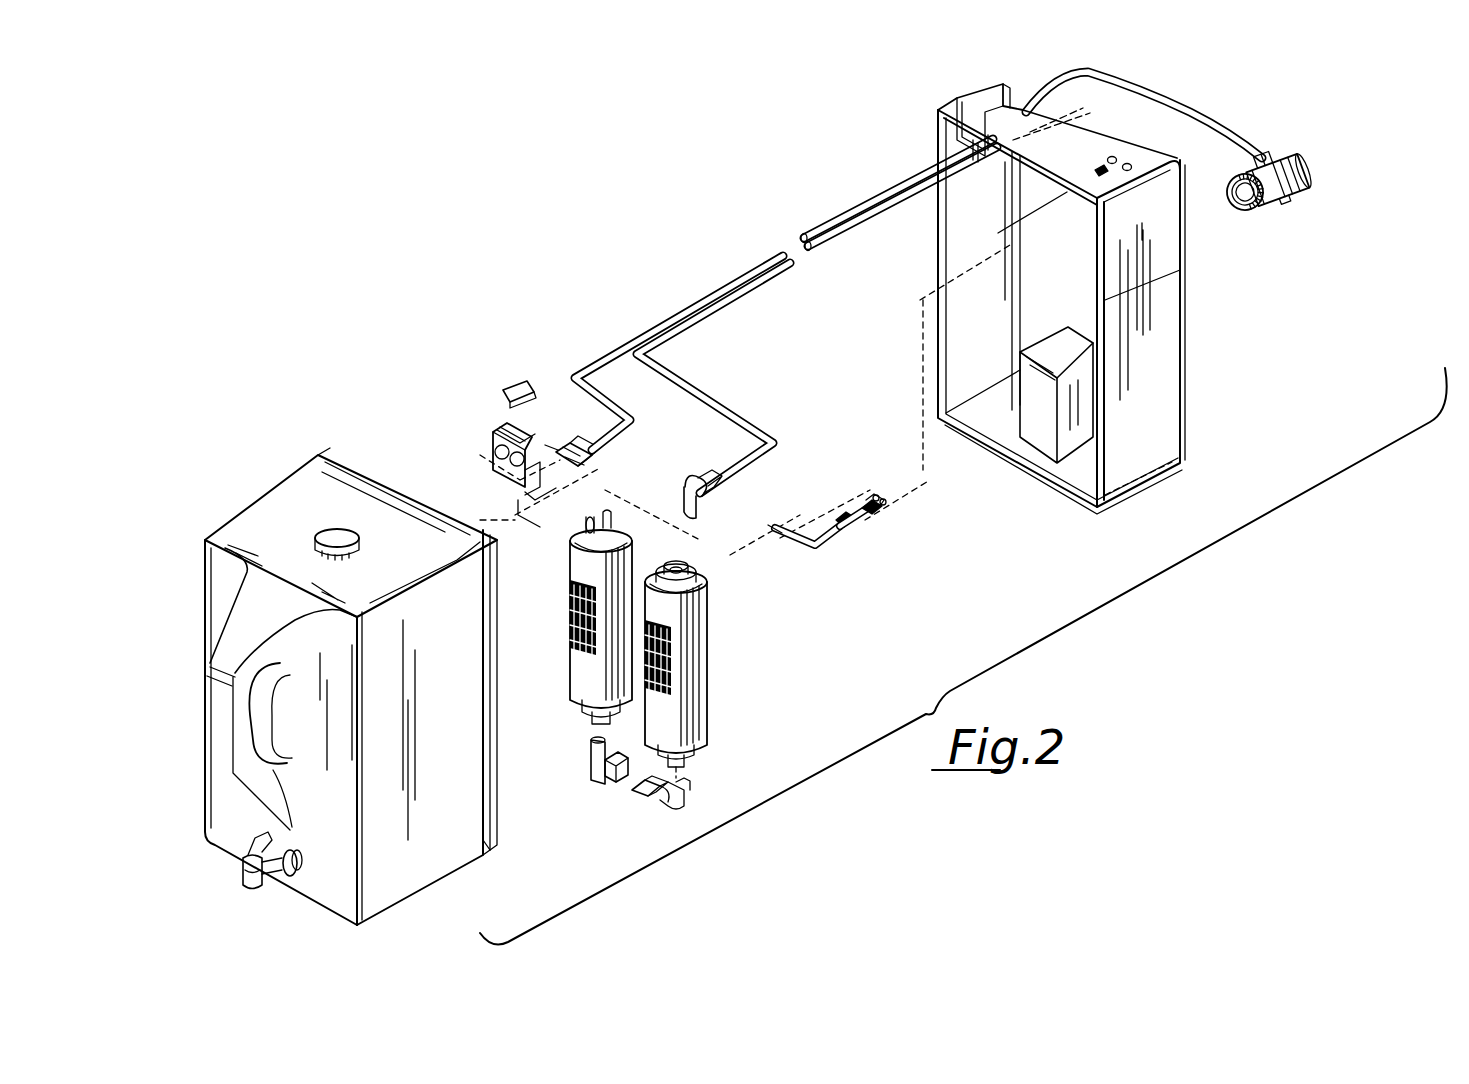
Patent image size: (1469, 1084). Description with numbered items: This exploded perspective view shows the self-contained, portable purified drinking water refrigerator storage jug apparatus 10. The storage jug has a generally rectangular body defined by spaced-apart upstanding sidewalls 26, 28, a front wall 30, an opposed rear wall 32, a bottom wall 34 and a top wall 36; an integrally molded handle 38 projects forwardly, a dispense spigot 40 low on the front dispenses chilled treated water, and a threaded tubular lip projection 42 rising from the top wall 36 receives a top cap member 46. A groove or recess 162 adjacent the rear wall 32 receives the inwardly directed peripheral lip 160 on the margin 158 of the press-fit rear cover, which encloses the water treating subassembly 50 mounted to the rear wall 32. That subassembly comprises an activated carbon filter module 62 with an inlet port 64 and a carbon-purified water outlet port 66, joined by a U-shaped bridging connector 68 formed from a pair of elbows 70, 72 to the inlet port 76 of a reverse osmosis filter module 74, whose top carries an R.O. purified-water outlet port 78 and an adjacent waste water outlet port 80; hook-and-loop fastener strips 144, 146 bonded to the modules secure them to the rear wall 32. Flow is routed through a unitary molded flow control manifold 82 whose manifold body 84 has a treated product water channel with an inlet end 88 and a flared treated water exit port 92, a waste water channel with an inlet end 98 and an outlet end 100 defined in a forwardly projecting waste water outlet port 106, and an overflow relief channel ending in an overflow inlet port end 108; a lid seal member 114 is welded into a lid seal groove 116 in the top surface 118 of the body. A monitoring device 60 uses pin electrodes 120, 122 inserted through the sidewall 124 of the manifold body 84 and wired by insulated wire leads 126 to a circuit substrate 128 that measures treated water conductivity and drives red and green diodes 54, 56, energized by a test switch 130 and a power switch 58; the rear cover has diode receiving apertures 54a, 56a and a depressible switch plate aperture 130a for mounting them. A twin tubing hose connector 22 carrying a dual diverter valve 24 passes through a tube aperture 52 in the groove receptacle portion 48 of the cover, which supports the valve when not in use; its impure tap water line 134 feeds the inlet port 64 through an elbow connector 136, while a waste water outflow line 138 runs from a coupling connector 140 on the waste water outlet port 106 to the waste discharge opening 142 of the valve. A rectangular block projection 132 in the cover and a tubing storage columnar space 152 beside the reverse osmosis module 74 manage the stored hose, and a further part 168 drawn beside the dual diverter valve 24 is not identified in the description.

The purified drinking water refrigerator storage jug apparatus 10 is at (660, 182).
The twin tubing hose connector 22 is at (1192, 112).
The dual diverter valve 24 is at (1316, 186).
The sidewall 26 is at (245, 500).
The sidewall 28 is at (423, 701).
The front wall 30 is at (303, 864).
The rear wall 32 is at (355, 440).
The bottom wall 34 is at (418, 900).
The top wall 36 is at (372, 566).
The handle 38 is at (217, 735).
The dispense spigot 40 is at (250, 888).
The tubular lip projection 42 is at (275, 533).
The top cap member 46 is at (325, 535).
The tubing adapter groove receptacle portion 48 is at (992, 80).
The water treating subassembly 50 is at (740, 778).
The tube aperture 52 is at (935, 158).
The red diode light 54 is at (875, 504).
The diode receiving aperture 54a is at (1116, 160).
The green diode light 56 is at (884, 496).
The diode receiving aperture 56a is at (1130, 168).
The power switch 58 is at (1130, 178).
The monitoring assembly 60 is at (888, 530).
The activated carbon filter module 62 is at (700, 694).
The inlet port 64 is at (710, 580).
The carbon-purified water outlet port 66 is at (690, 740).
The U-shaped bridging connector 68 is at (690, 820).
The elbow 70 is at (666, 805).
The elbow 72 is at (600, 768).
The reverse osmosis filter module 74 is at (580, 680).
The inlet port 76 is at (592, 738).
The R.O. purified-water outlet port 78 is at (608, 528).
The waste water outlet port 80 is at (608, 516).
The flow control manifold 82 is at (480, 405).
The manifold body 84 is at (540, 430).
The inlet end 88 is at (493, 482).
The treated water exit port 92 is at (552, 450).
The inlet end 98 is at (500, 447).
The outlet end 100 is at (585, 545).
The waste water outlet port 106 is at (548, 500).
The overflow inlet port end 108 is at (493, 432).
The lid seal member 114 is at (527, 383).
The lid seal groove 116 is at (516, 383).
The top surface 118 is at (562, 422).
The pin electrode member 120 is at (810, 525).
The pin electrode member 122 is at (779, 540).
The sidewall 124 is at (538, 520).
The insulated wire leads 126 is at (821, 515).
The circuit substrate 128 is at (872, 532).
The test switch 130 is at (850, 514).
The depressible switch plate aperture 130a is at (1094, 158).
The rectangular block projection 132 is at (1040, 410).
The impure tap water line 134 is at (748, 412).
The elbow connector 136 is at (695, 519).
The waste water outflow line 138 is at (601, 345).
The coupling connector 140 is at (605, 458).
The waste discharge opening 142 is at (1305, 143).
The hook-and-loop fastener strip 144 is at (672, 660).
The hook-and-loop fastener strip 146 is at (580, 600).
The tubing storage columnar space 152 is at (968, 293).
The margin 158 is at (1112, 312).
The peripheral lip 160 is at (946, 222).
The groove or recess 162 is at (328, 448).
The pump inlet 168 is at (1268, 230).